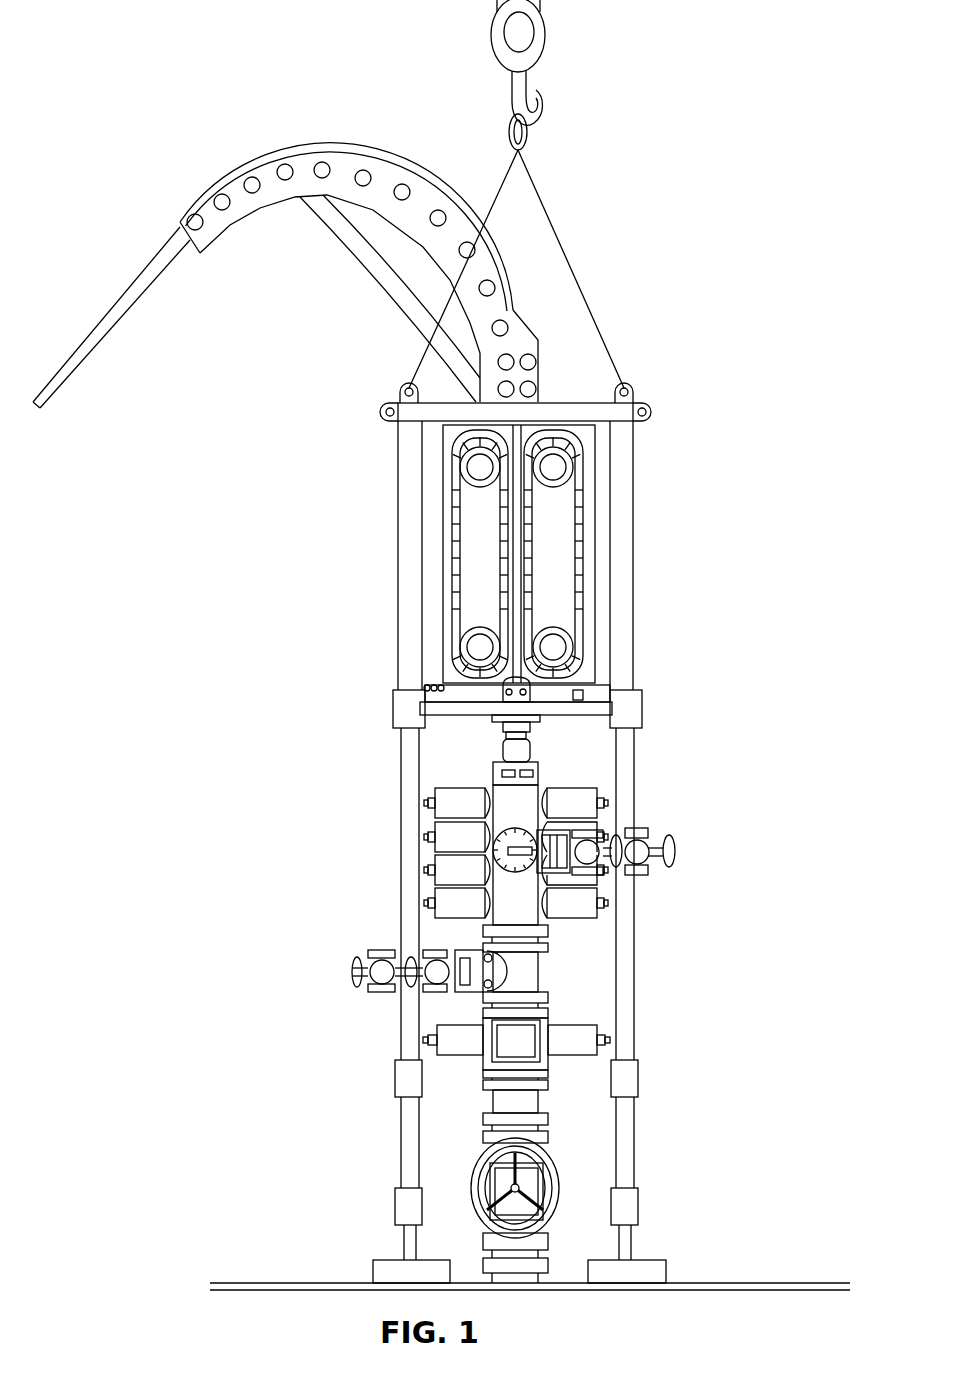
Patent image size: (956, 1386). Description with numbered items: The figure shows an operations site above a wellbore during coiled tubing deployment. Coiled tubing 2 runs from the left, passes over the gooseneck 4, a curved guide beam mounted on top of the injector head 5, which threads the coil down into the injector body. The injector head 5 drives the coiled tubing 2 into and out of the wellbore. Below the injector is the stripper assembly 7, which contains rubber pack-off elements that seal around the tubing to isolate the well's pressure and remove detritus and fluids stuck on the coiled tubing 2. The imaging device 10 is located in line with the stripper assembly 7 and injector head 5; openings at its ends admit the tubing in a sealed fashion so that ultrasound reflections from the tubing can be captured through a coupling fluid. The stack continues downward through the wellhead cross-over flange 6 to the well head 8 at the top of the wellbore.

The coiled tubing 2 is at (111, 317).
The gooseneck 4 is at (333, 258).
The injector head 5 is at (441, 511).
The imaging device 10 is at (535, 687).
The stripper assembly 7 is at (569, 737).
The wellhead cross-over flange 6 is at (496, 1101).
The well head 8 is at (565, 1178).